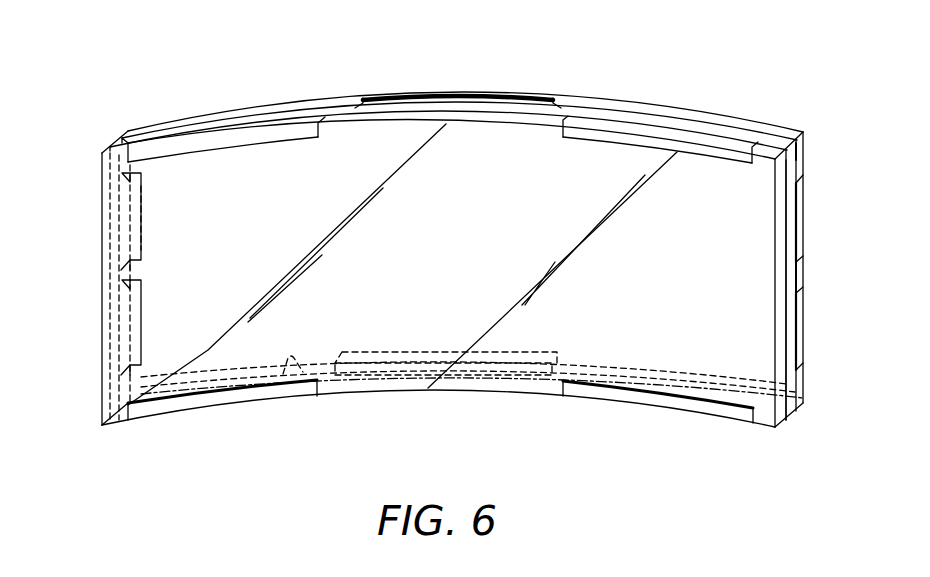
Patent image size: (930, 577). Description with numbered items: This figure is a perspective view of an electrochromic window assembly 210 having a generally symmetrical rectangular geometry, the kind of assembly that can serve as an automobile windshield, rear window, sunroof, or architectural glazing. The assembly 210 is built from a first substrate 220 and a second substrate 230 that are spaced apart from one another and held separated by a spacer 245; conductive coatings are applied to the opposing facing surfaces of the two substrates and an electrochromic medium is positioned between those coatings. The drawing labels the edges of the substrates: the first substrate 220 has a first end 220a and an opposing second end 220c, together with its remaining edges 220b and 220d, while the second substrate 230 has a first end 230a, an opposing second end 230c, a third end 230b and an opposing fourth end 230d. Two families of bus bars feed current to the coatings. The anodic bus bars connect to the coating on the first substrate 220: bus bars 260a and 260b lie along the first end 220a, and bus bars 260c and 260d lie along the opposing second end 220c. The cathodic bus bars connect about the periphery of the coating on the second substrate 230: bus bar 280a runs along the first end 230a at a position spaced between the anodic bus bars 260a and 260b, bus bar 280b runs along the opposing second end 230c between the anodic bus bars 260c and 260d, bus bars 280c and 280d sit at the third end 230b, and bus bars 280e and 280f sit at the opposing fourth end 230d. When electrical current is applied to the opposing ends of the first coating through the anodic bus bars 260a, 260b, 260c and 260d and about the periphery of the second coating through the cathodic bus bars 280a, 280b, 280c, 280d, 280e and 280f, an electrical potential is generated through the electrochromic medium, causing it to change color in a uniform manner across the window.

The electrochromic window assembly 210 is at (97, 95).
The first substrate 220 is at (490, 180).
The first end of first substrate 220a is at (335, 118).
The substrate left edge portion 220b is at (102, 342).
The second end of first substrate 220c is at (522, 392).
The substrate right edge portion 220d is at (778, 385).
The second substrate 230 is at (800, 152).
The first end of second substrate 230a is at (272, 107).
The third end of second substrate 230b is at (123, 268).
The second end of second substrate 230c is at (283, 378).
The fourth end of second substrate 230d is at (797, 278).
The spacer 245 is at (765, 138).
The anodic bus bar 260a is at (182, 133).
The anodic bus bar 260b is at (680, 133).
The anodic bus bar 260c is at (207, 400).
The anodic bus bar 260d is at (663, 400).
The cathodic bus bar 280a is at (412, 98).
The cathodic bus bar 280b is at (483, 365).
The cathodic bus bar 280c is at (142, 208).
The cathodic bus bar 280d is at (142, 315).
The cathodic bus bar 280e is at (800, 215).
The cathodic bus bar 280f is at (800, 335).